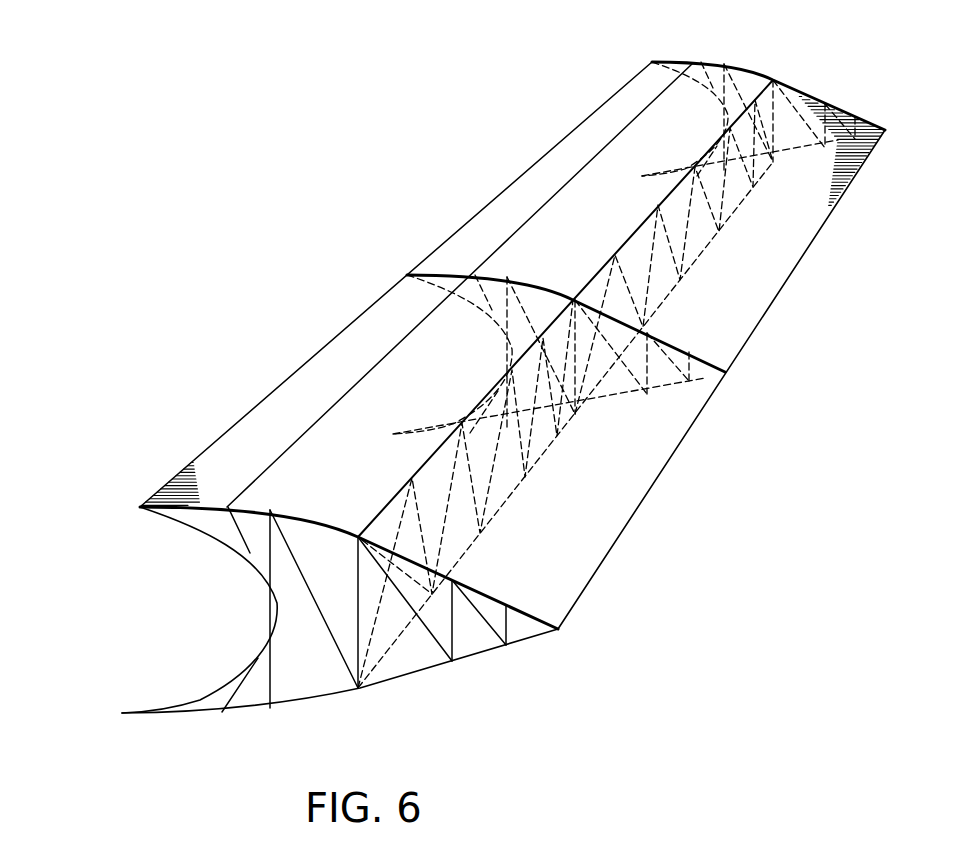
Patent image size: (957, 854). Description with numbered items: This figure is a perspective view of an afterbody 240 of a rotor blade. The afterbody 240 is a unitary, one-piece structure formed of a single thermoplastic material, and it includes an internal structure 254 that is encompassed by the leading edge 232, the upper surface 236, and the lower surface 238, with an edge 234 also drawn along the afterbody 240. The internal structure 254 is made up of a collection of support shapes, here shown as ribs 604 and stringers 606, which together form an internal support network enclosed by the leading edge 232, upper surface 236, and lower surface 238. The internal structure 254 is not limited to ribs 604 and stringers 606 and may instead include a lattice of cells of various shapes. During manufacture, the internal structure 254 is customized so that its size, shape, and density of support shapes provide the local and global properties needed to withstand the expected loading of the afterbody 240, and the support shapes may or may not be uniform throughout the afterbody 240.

The afterbody 240 is at (190, 103).
The upper surface 236 is at (317, 372).
The leading edge 234 is at (630, 532).
The leading edge 232 is at (215, 692).
The lower surface 238 is at (300, 707).
The internal structure 254 is at (358, 620).
The stringers 606 is at (638, 227).
The ribs 604 is at (680, 343).